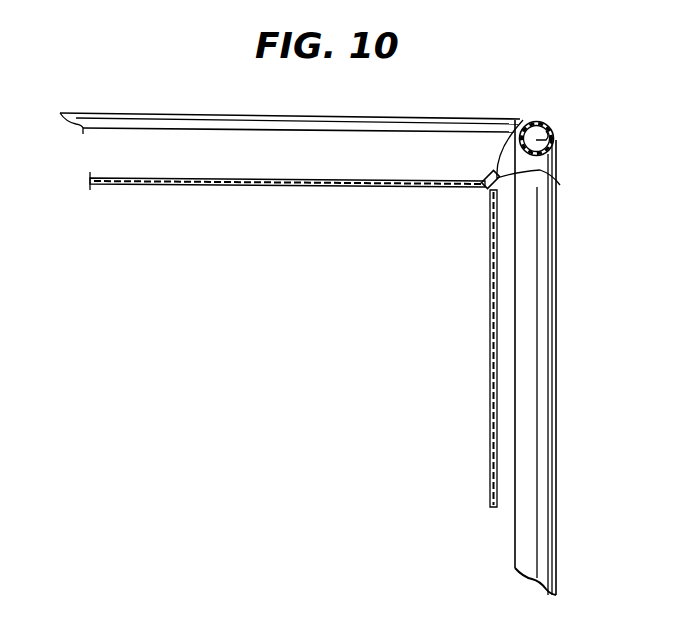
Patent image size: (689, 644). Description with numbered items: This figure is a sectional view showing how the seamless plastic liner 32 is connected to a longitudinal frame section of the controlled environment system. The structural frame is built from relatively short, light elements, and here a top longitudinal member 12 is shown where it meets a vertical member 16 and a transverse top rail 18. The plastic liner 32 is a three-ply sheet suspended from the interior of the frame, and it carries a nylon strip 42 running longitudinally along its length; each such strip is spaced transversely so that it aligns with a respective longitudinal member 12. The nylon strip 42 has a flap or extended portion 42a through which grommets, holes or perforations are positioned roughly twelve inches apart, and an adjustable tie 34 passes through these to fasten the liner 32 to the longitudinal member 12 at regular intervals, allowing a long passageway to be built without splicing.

The top longitudinal member 12 is at (548, 120).
The vertical member 16 is at (553, 337).
The transverse top rail 18 is at (293, 118).
The plastic liner 32 is at (255, 178).
The adjustable tie 34 is at (560, 185).
The nylon strip 42 is at (486, 196).
The flap or extended portion 42a is at (495, 176).